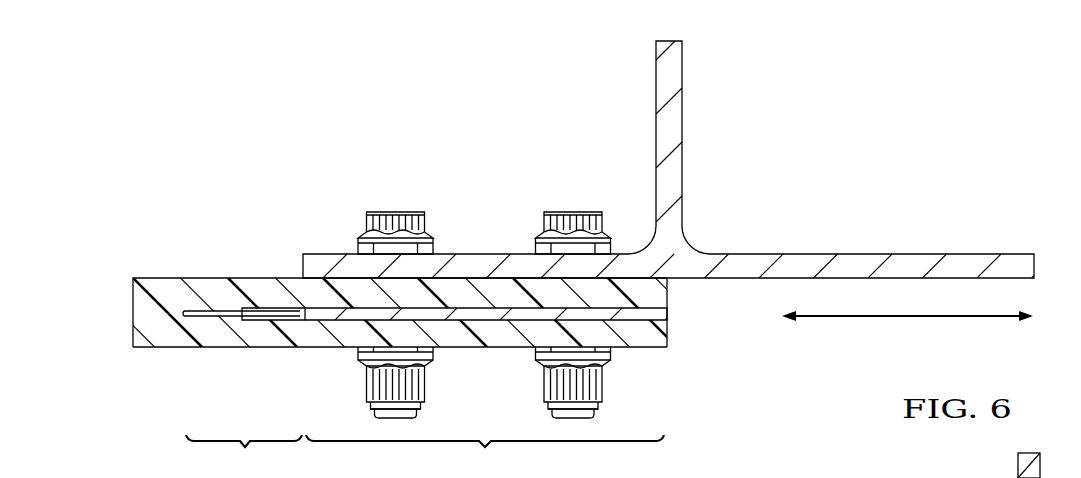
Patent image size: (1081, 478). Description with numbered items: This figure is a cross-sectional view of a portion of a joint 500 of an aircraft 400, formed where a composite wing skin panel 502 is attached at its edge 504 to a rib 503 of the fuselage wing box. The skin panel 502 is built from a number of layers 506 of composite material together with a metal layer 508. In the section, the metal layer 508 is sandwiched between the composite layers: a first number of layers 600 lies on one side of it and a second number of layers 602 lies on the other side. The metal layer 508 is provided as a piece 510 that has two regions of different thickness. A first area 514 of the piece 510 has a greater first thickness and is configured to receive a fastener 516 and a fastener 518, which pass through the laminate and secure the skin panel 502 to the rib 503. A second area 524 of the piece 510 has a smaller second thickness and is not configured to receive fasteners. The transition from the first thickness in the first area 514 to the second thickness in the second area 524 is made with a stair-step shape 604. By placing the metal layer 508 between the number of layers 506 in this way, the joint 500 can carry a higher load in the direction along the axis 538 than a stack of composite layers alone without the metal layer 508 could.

The joint 500 is at (841, 107).
The aircraft 400 is at (861, 254).
The rib 503 is at (713, 254).
The skin panel 502 is at (158, 268).
The second number of layers 602 is at (456, 292).
The first number of layers 600 is at (502, 340).
The piece 510 is at (643, 334).
The metal layer 508 is at (657, 313).
The stair-step shape 604 is at (217, 331).
The number of layers 506 is at (276, 353).
The edge 504 is at (668, 345).
The fastener 516 is at (392, 212).
The fastener 518 is at (569, 212).
The axis 538 is at (905, 318).
The second area 524 is at (244, 456).
The first area 514 is at (485, 456).